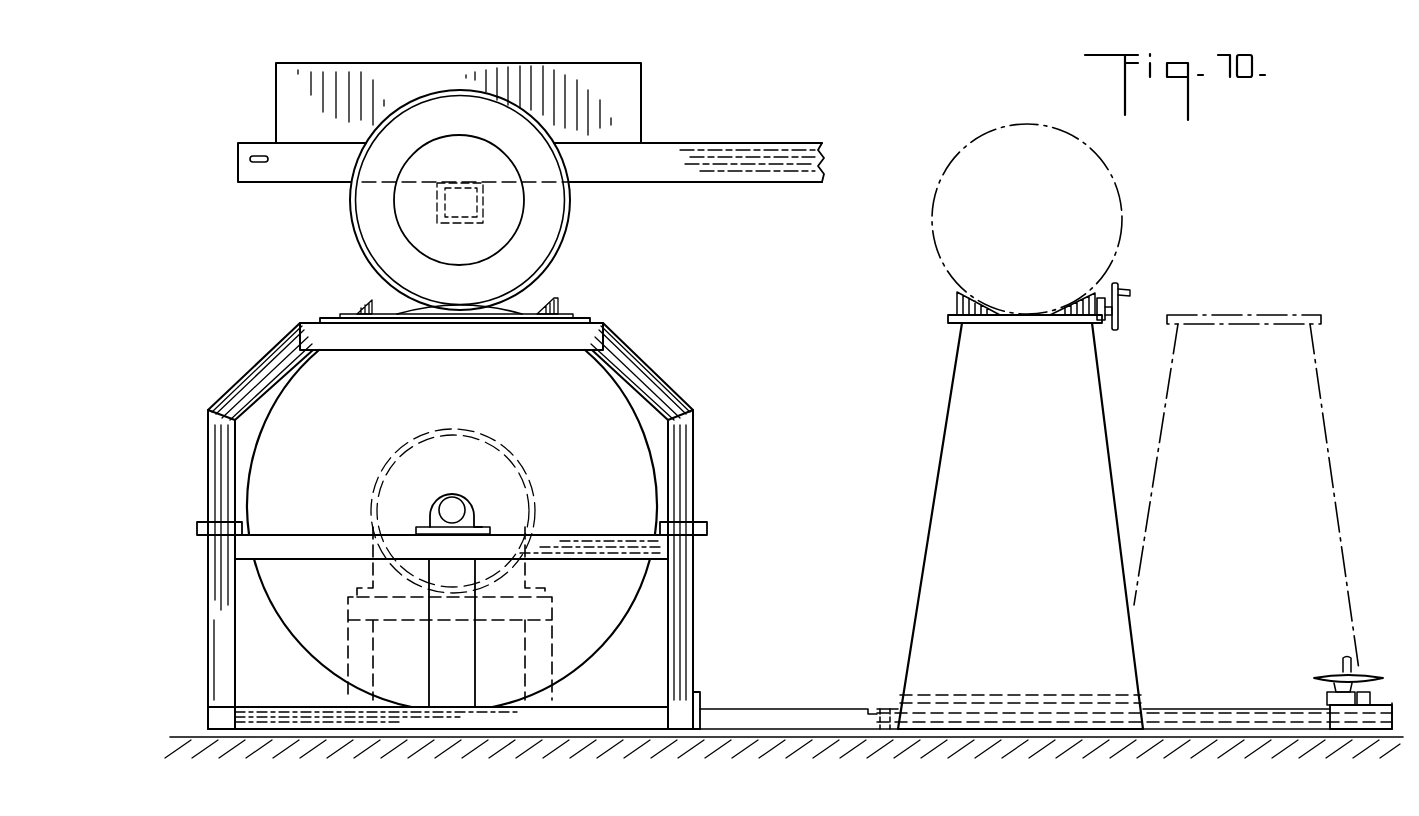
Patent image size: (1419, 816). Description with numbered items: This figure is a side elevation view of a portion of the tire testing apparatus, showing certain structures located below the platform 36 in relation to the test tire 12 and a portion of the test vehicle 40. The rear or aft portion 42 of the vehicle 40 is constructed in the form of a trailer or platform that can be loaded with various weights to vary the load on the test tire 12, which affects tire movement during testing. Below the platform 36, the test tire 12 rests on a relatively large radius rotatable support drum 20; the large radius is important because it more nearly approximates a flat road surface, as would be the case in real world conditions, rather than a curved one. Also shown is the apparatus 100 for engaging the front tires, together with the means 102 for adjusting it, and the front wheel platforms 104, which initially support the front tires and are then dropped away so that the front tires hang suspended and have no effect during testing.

The test tire 12 is at (573, 218).
The rotatable support drum 20 is at (657, 455).
The platform 36 is at (583, 318).
The test vehicle 40 is at (748, 145).
The rear or aft portion 42 is at (268, 125).
The apparatus for engaging the front tires 100 is at (1143, 298).
The means for adjusting 102 is at (1078, 320).
The front wheel platforms 104 is at (956, 301).